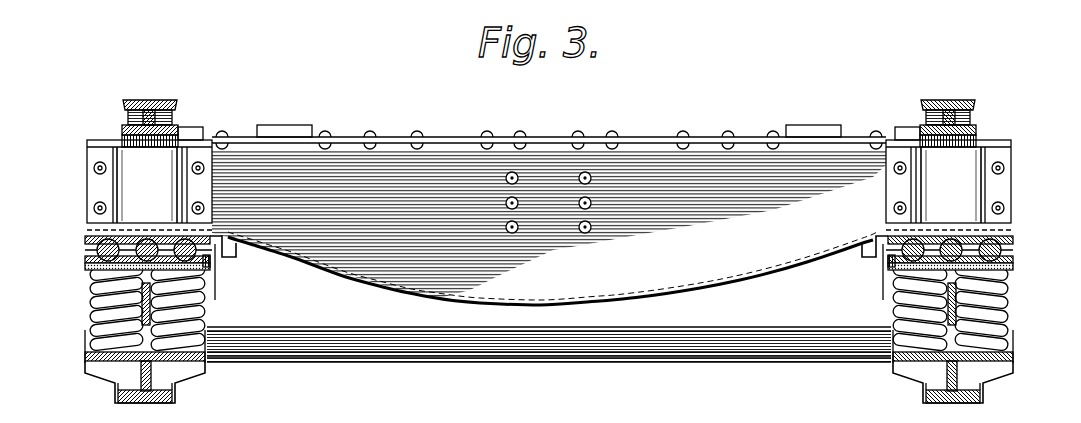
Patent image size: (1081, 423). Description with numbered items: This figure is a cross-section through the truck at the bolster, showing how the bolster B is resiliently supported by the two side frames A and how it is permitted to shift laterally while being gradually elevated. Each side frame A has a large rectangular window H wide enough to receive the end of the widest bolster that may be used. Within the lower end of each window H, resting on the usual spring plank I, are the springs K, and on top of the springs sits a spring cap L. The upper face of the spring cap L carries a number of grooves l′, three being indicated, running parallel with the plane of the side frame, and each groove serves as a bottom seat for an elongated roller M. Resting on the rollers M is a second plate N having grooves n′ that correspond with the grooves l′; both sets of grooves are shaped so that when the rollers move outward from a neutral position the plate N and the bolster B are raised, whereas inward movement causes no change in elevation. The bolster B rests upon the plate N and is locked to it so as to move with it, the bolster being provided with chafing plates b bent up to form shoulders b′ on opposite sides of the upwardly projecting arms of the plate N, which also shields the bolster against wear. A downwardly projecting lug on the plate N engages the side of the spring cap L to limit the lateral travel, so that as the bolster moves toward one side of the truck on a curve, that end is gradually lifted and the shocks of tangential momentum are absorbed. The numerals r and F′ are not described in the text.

The side frame A is at (143, 99).
The window H is at (122, 140).
The chafing plate b is at (88, 172).
The shoulder b′ is at (175, 183).
The rivets r is at (62, 192).
The groove n′ is at (87, 230).
The plate N is at (85, 236).
The roller M is at (90, 252).
The spring cap L is at (87, 264).
The groove l′ is at (208, 285).
The spring K is at (90, 317).
The foot F′ is at (115, 397).
The bolster B is at (540, 273).
The spring plank I is at (338, 348).